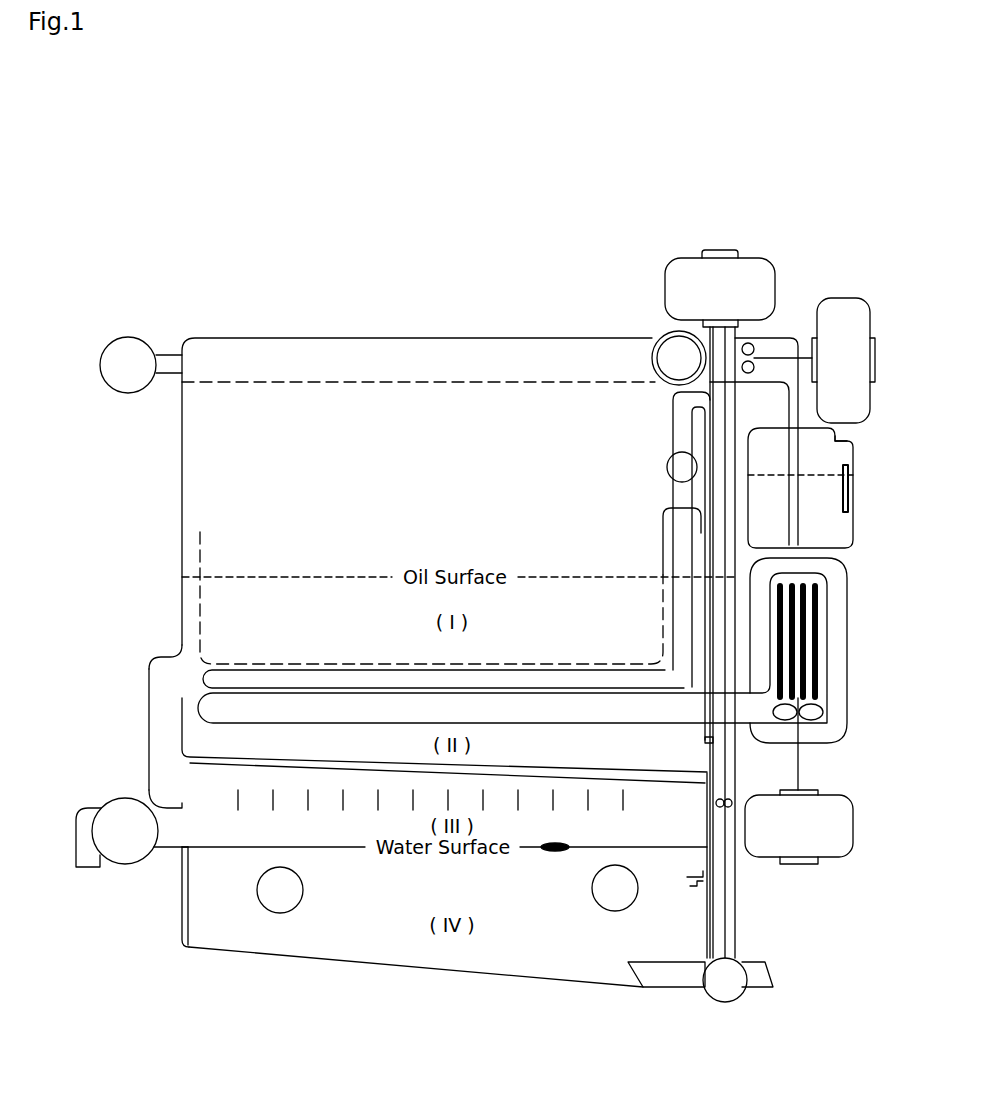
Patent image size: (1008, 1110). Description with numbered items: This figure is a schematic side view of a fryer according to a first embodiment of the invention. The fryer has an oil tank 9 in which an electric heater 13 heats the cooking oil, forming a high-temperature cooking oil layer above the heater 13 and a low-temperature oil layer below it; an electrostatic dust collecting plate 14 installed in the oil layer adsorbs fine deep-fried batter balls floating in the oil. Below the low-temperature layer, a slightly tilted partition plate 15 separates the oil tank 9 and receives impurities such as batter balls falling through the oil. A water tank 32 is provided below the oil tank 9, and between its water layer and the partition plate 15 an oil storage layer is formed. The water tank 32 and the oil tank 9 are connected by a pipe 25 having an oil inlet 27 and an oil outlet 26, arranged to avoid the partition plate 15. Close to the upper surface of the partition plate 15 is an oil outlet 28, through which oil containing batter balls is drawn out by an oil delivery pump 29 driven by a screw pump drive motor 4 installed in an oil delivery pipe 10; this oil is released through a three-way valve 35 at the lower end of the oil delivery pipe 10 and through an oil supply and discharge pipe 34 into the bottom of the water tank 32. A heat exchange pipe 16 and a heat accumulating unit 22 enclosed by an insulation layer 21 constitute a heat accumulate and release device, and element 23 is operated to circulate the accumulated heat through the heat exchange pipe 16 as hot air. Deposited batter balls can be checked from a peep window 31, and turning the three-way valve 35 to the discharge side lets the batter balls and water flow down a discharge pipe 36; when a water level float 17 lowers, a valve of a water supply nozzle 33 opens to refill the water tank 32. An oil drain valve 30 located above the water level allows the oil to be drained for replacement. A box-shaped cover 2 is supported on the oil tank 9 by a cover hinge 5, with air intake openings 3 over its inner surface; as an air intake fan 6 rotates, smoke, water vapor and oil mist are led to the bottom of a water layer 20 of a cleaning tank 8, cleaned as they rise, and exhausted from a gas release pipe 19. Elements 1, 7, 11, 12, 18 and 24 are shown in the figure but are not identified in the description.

The drain valve 1 is at (127, 337).
The box-shaped cover 2 is at (226, 338).
The air intake openings 3 is at (308, 382).
The screw pump drive motor 4 is at (690, 287).
The cover hinge 5 is at (651, 360).
The air intake fan 6 is at (752, 344).
The pump motor 7 is at (856, 300).
The cleaning tank 8 is at (845, 440).
The oil tank 9 is at (182, 448).
The oil delivery pipe 10 is at (736, 776).
The inner pipe 11 is at (720, 474).
The oil discharge pipe 12 is at (233, 670).
The electric heater 13 is at (288, 680).
The electrostatic dust collecting plate 14 is at (343, 790).
The partition plate 15 is at (397, 757).
The heat exchange pipe 16 is at (508, 705).
The water level float 17 is at (562, 845).
The drain hole 18 is at (615, 877).
The gas release pipe 19 is at (849, 488).
The water layer 20 is at (820, 522).
The insulation layer 21 is at (838, 613).
The heat accumulating unit 22 is at (820, 660).
The fan 23 is at (828, 710).
The fan motor 24 is at (836, 828).
The pipe 25 is at (149, 655).
The oil outlet 26 is at (182, 688).
The oil inlet 27 is at (182, 782).
The oil outlet 28 is at (707, 753).
The oil delivery pump 29 is at (717, 804).
The oil drain valve 30 is at (120, 838).
The peep window 31 is at (180, 935).
The water tank 32 is at (292, 957).
The water supply nozzle 33 is at (687, 877).
The oil supply and discharge pipe 34 is at (653, 975).
The three-way valve 35 is at (725, 985).
The discharge pipe 36 is at (765, 975).